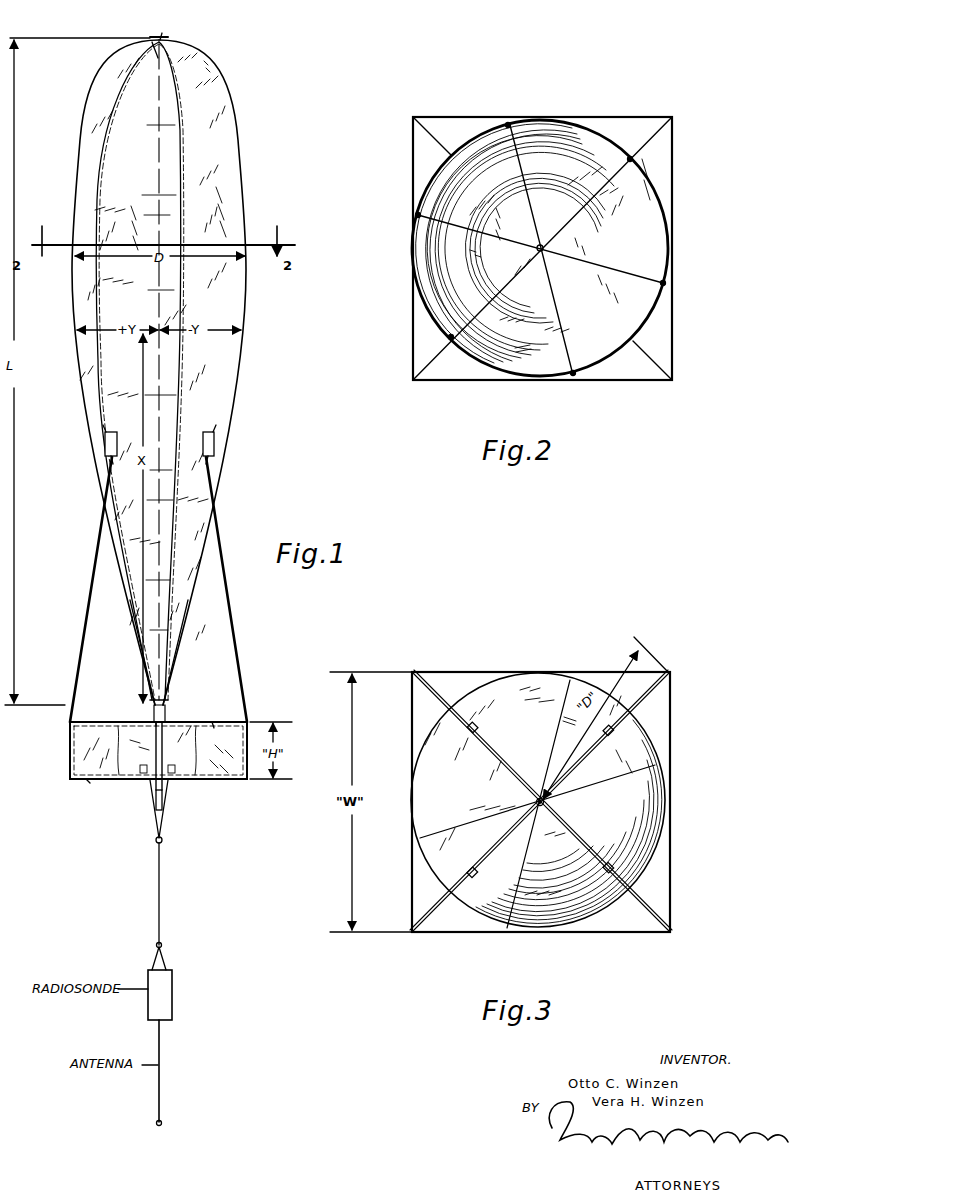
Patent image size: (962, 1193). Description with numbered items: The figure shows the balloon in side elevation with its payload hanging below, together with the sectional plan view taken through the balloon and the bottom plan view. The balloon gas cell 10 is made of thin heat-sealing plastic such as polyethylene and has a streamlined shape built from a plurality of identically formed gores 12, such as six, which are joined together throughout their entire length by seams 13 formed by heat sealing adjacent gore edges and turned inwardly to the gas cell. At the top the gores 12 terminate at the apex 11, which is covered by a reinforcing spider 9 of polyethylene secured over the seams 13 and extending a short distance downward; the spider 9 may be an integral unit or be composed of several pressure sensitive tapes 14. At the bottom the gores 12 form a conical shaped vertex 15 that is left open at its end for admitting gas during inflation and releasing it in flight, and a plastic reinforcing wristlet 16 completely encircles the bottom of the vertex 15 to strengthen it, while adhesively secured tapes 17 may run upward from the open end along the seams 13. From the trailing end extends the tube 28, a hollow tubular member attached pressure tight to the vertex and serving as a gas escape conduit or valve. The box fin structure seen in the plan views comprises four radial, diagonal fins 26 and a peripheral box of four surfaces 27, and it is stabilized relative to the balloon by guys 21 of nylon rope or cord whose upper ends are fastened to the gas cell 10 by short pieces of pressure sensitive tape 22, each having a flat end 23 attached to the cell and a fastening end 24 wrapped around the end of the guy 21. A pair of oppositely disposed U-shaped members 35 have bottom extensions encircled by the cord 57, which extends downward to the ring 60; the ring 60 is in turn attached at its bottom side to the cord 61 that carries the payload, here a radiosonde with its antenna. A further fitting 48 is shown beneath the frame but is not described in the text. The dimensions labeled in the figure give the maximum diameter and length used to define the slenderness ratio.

In FIG. 1, the reinforcing spider 9 is at (150, 37).
In FIG. 1, the balloon gas cell 10 is at (240, 132).
In FIG. 2, the balloon gas cell 10 is at (655, 175).
In FIG. 3, the balloon gas cell 10 is at (640, 740).
In FIG. 1, the apex 11 is at (161, 38).
In FIG. 1, the gores 12 is at (130, 186).
In FIG. 2, the gores 12 is at (588, 270).
In FIG. 3, the gores 12 is at (448, 858).
In FIG. 1, the seams 13 is at (97, 225).
In FIG. 2, the seams 13 is at (510, 122).
In FIG. 3, the seams 13 is at (570, 680).
In FIG. 1, the pressure sensitive tapes 14 is at (150, 48).
In FIG. 1, the conical shaped vertex 15 is at (176, 673).
In FIG. 1, the plastic reinforcing wristlet 16 is at (166, 713).
In FIG. 1, the adhesively secured tapes 17 is at (166, 702).
In FIG. 1, the guys 21 is at (91, 578).
In FIG. 1, the pressure sensitive tape 22 is at (105, 445).
In FIG. 3, the pressure sensitive tape 22 is at (477, 725).
In FIG. 1, the flat end 23 is at (106, 433).
In FIG. 1, the fastening end 24 is at (110, 463).
In FIG. 1, the radial fins 26 is at (177, 748).
In FIG. 2, the radial fins 26 is at (430, 137).
In FIG. 3, the radial fins 26 is at (591, 762).
In FIG. 1, the peripheral box surfaces 27 is at (86, 761).
In FIG. 2, the peripheral box surfaces 27 is at (645, 118).
In FIG. 3, the peripheral box surfaces 27 is at (468, 650).
In FIG. 1, the tube 28 is at (160, 745).
In FIG. 3, the tube 28 is at (546, 803).
In FIG. 1, the U-shaped members 35 is at (215, 722).
In FIG. 1, the lower fitting 48 is at (163, 800).
In FIG. 1, the cord 57 is at (153, 812).
In FIG. 1, the ring 60 is at (163, 840).
In FIG. 1, the cord 61 is at (162, 899).